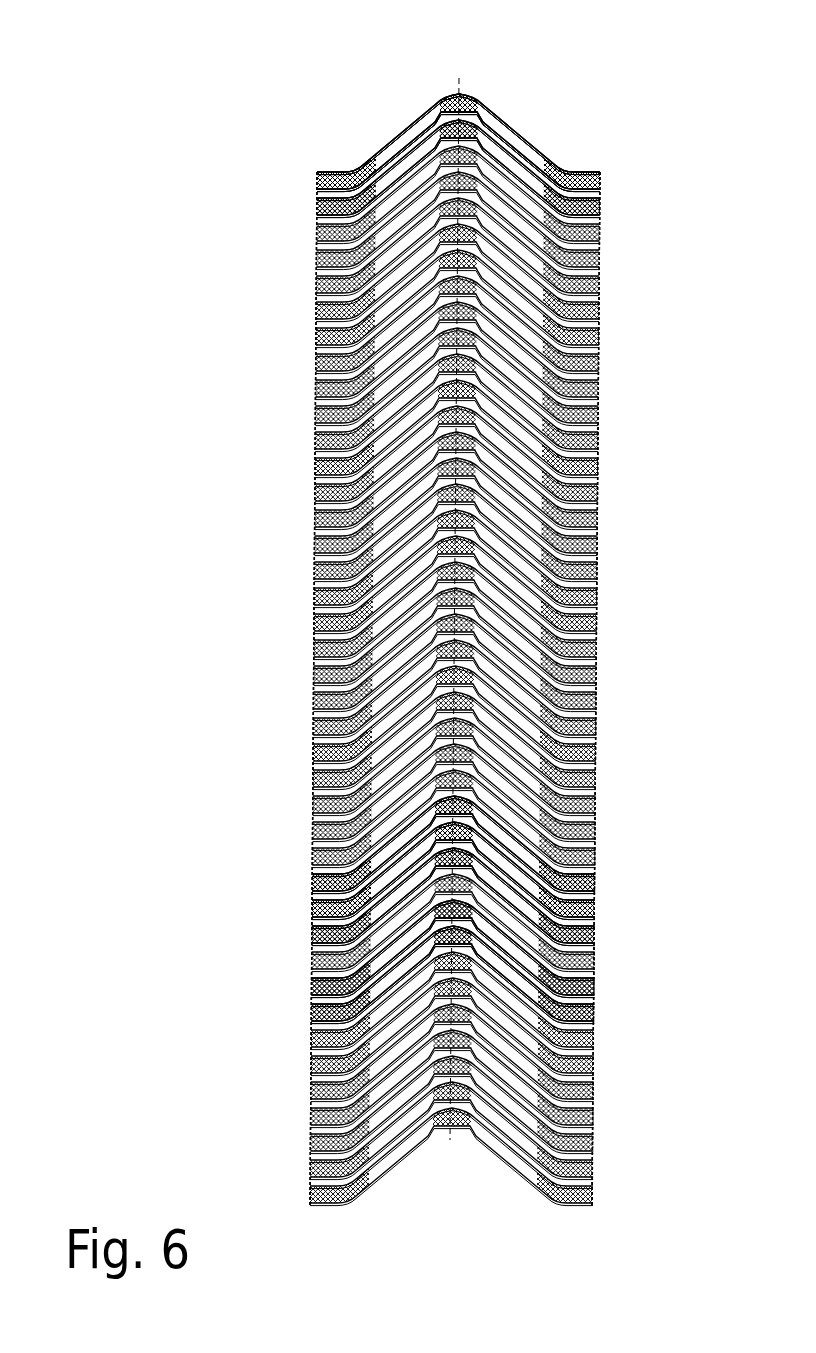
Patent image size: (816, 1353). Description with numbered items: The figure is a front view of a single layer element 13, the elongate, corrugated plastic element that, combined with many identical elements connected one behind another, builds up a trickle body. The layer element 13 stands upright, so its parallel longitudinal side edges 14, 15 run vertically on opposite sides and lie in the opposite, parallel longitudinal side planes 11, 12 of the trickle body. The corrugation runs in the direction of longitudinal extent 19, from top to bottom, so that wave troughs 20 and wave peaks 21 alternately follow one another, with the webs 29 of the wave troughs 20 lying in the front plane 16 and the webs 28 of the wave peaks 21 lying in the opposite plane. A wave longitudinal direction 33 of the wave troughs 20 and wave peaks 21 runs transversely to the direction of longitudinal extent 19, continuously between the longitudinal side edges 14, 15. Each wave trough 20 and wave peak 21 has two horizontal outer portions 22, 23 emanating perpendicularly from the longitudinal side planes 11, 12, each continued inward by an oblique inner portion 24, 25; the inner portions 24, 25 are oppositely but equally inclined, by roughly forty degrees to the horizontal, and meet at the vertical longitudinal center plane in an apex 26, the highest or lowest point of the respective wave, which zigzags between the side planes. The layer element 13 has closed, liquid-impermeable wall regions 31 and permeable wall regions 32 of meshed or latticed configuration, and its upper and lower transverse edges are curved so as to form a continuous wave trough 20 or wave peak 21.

The longitudinal side plane 11 is at (313, 452).
The longitudinal side plane 12 is at (598, 508).
The layer element 13 is at (580, 108).
The longitudinal side edge 14 is at (313, 688).
The longitudinal side edge 15 is at (596, 688).
The front plane 16 is at (508, 167).
The direction of longitudinal extent 19 is at (288, 625).
The wave trough 20 is at (520, 906).
The wave peak 21 is at (515, 897).
The outer portion 22 is at (335, 1213).
The outer portion 23 is at (573, 1215).
The inner portion 24 is at (388, 1178).
The inner portion 25 is at (502, 1172).
The apex 26 is at (458, 73).
The web 28 is at (597, 940).
The web 29 is at (597, 973).
The closed wall region 31 is at (398, 122).
The permeable wall region 32 is at (343, 175).
The wave longitudinal direction 33 is at (392, 826).